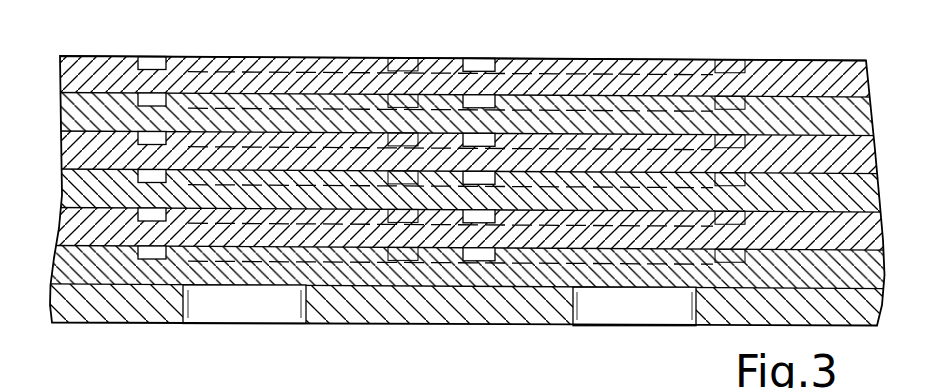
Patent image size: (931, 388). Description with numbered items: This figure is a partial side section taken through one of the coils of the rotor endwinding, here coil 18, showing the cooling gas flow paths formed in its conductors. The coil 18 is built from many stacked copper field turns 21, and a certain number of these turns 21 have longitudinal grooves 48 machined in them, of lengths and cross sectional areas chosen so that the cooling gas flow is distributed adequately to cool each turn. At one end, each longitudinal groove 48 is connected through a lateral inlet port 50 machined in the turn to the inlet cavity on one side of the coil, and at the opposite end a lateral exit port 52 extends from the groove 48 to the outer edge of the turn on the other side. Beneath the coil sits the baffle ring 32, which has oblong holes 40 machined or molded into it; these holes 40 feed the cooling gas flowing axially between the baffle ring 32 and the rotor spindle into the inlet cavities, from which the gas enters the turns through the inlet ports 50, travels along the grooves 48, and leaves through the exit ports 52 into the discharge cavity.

The coil 18 is at (798, 54).
The field turns 21 is at (555, 82).
The baffle ring 32 is at (408, 307).
The oblong holes 40 is at (248, 308).
The longitudinal grooves 48 is at (271, 56).
The lateral inlet port 50 is at (148, 56).
The lateral exit port 52 is at (401, 57).